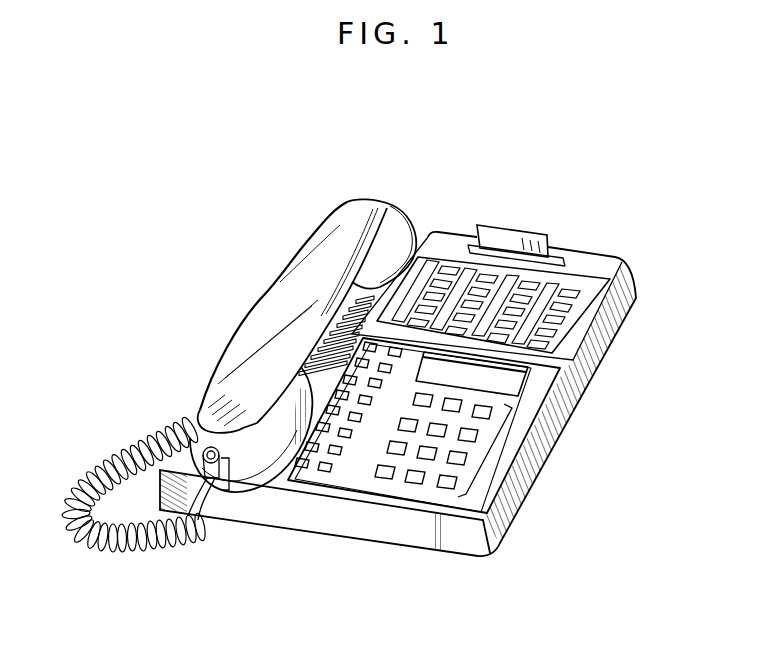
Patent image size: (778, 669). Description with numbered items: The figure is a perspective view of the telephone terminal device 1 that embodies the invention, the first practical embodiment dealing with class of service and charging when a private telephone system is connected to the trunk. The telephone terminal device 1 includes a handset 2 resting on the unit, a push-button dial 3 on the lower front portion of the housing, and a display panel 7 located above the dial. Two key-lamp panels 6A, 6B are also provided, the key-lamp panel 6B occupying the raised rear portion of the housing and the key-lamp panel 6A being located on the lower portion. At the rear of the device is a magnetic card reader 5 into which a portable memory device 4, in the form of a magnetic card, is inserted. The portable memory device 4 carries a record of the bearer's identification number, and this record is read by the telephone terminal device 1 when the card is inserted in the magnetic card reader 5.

The telephone terminal device 1 is at (514, 523).
The handset 2 is at (377, 198).
The push-button dial 3 is at (488, 450).
The portable memory device 4 is at (510, 227).
The magnetic card reader 5 is at (562, 245).
The key-lamp panel 6A is at (296, 478).
The key-lamp panel 6B is at (599, 282).
The display panel 7 is at (510, 383).